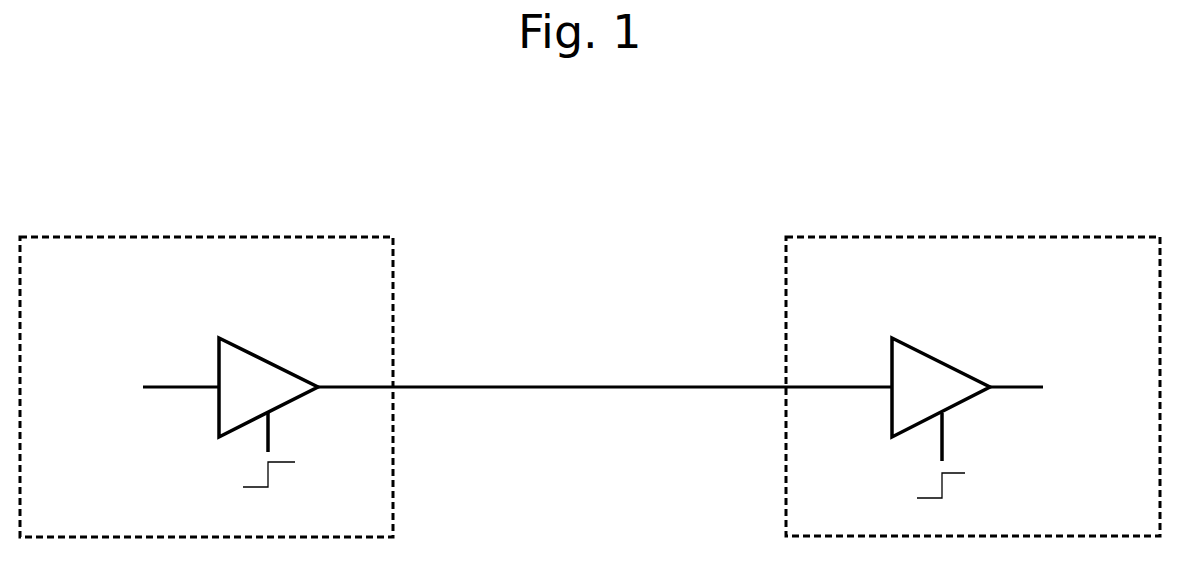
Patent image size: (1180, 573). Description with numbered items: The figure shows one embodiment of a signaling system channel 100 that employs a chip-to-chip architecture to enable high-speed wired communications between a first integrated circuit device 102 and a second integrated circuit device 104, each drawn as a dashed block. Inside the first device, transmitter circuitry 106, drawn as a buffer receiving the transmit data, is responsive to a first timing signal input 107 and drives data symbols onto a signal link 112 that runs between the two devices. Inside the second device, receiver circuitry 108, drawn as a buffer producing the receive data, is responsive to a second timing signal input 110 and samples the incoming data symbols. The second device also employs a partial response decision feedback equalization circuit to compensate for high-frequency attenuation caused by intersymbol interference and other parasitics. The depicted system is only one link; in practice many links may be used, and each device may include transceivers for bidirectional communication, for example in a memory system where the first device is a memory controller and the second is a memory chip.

The signaling system channel 100 is at (88, 153).
The first integrated circuit device 102 is at (279, 236).
The second integrated circuit device 104 is at (925, 236).
The transmitter circuitry 106 is at (275, 365).
The first timing signal input 107 is at (271, 432).
The receiver circuitry 108 is at (937, 358).
The second timing signal input 110 is at (933, 430).
The signal link 112 is at (568, 385).